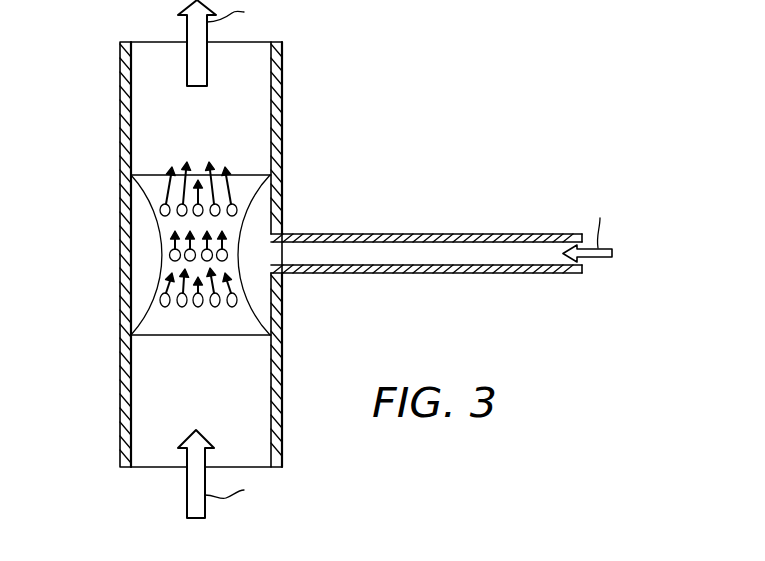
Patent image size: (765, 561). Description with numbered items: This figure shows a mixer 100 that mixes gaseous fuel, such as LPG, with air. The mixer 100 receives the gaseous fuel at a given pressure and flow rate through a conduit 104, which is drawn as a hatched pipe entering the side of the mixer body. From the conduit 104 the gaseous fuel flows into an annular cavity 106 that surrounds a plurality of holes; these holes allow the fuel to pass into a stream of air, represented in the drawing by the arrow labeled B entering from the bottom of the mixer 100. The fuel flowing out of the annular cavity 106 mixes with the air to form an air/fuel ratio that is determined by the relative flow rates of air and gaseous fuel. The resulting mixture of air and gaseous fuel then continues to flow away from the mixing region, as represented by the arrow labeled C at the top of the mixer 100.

The mixer 100 is at (352, 88).
The conduit 104 is at (383, 233).
The annular cavity 106 is at (140, 263).